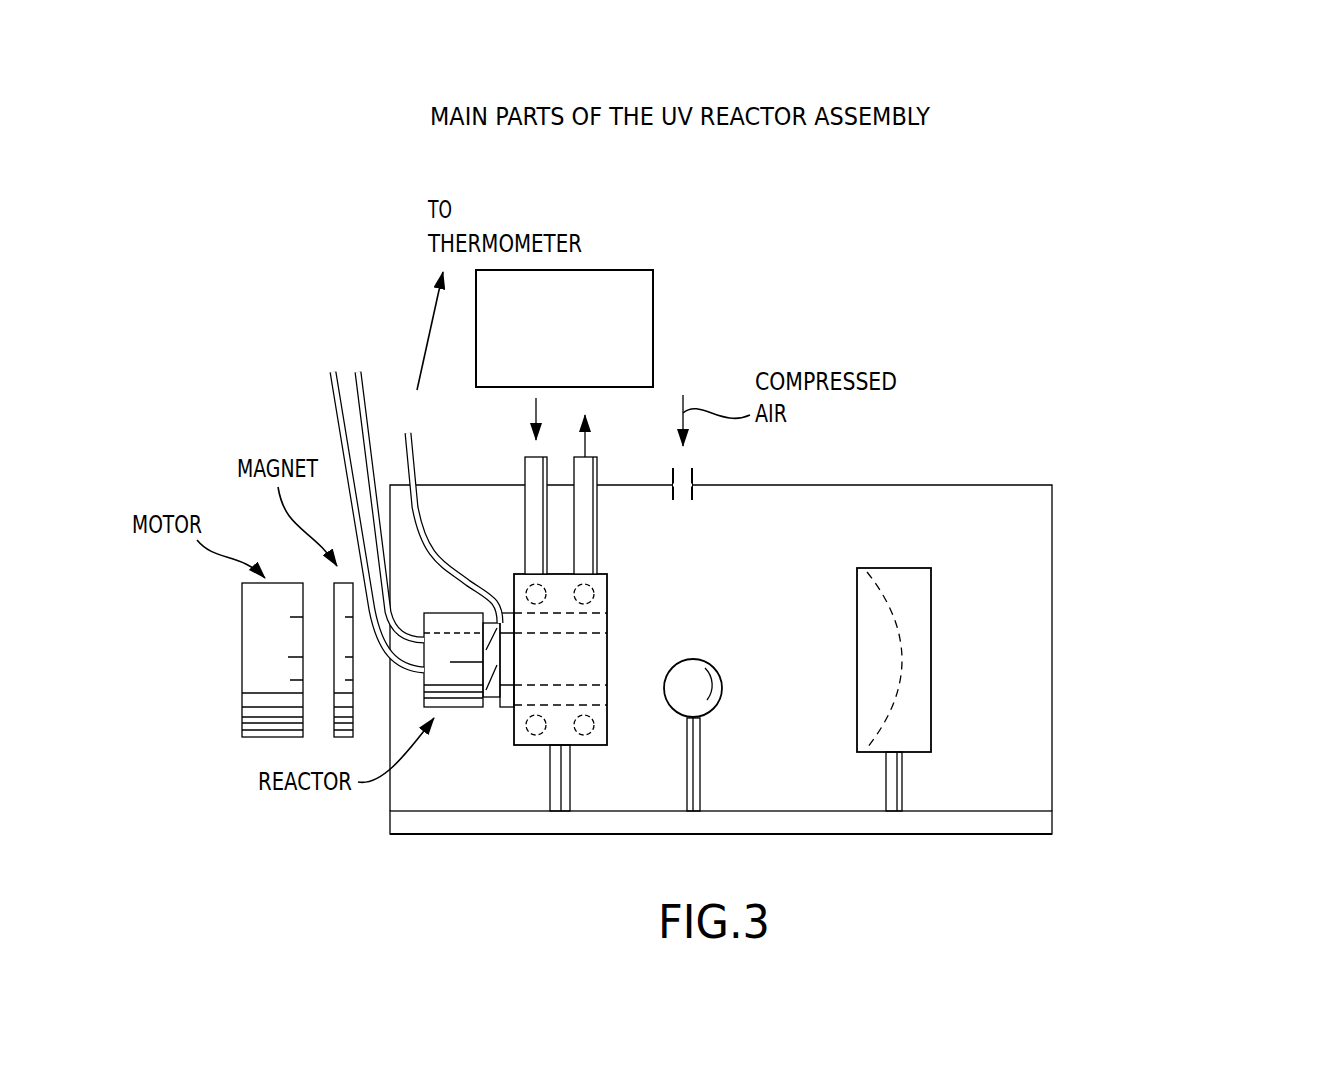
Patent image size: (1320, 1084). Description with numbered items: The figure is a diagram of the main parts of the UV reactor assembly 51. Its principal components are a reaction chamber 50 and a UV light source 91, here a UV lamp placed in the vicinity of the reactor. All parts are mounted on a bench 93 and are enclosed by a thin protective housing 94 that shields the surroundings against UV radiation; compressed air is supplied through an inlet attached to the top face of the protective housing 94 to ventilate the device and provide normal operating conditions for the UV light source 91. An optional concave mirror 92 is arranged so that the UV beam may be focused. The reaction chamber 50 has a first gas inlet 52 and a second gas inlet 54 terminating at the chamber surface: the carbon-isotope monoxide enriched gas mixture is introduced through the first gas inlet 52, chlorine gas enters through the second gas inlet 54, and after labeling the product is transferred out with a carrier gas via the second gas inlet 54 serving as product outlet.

The reaction chamber 50 is at (607, 650).
The UV reactor assembly 51 is at (980, 838).
The first gas inlet 52 is at (323, 358).
The second gas inlet 54 is at (354, 358).
The UV light source 91 is at (705, 658).
The concave mirror 92 is at (888, 566).
The bench 93 is at (432, 840).
The protective housing 94 is at (1056, 640).